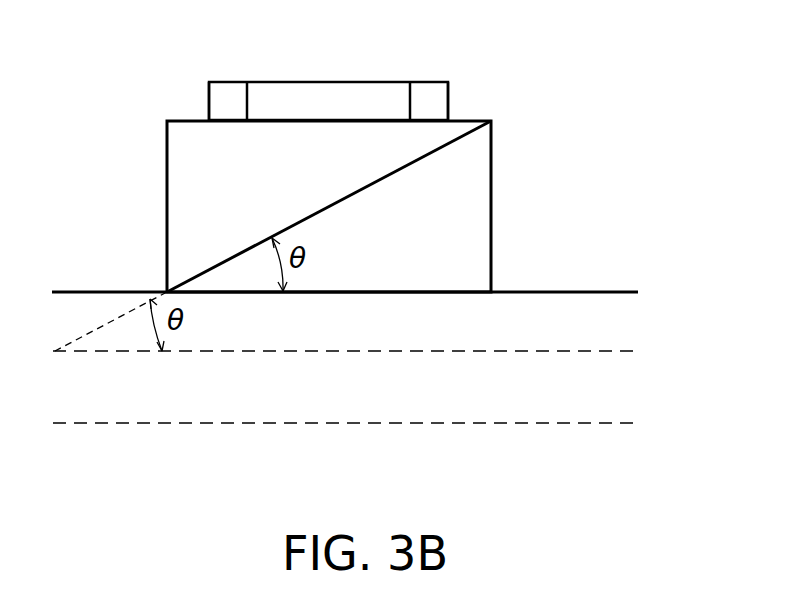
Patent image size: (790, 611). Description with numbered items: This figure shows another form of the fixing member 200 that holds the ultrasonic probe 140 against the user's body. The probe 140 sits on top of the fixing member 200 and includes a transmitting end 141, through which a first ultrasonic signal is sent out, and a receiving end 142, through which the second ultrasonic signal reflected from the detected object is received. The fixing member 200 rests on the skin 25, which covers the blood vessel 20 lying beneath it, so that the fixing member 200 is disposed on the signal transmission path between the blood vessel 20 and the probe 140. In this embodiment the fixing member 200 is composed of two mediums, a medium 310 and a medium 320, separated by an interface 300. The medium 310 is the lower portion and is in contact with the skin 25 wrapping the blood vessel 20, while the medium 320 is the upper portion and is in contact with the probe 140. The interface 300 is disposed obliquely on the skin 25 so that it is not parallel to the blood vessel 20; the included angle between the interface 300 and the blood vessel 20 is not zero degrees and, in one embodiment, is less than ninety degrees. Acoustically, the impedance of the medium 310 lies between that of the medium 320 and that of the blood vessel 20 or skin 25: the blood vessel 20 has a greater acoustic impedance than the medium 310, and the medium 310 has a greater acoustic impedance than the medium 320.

The blood vessel 20 is at (525, 351).
The skin 25 is at (611, 290).
The probe 140 is at (332, 82).
The transmitting end 141 is at (227, 82).
The receiving end 142 is at (425, 82).
The fixing member 200 is at (492, 207).
The interface 300 is at (453, 141).
The medium 310 is at (452, 263).
The medium 320 is at (190, 198).